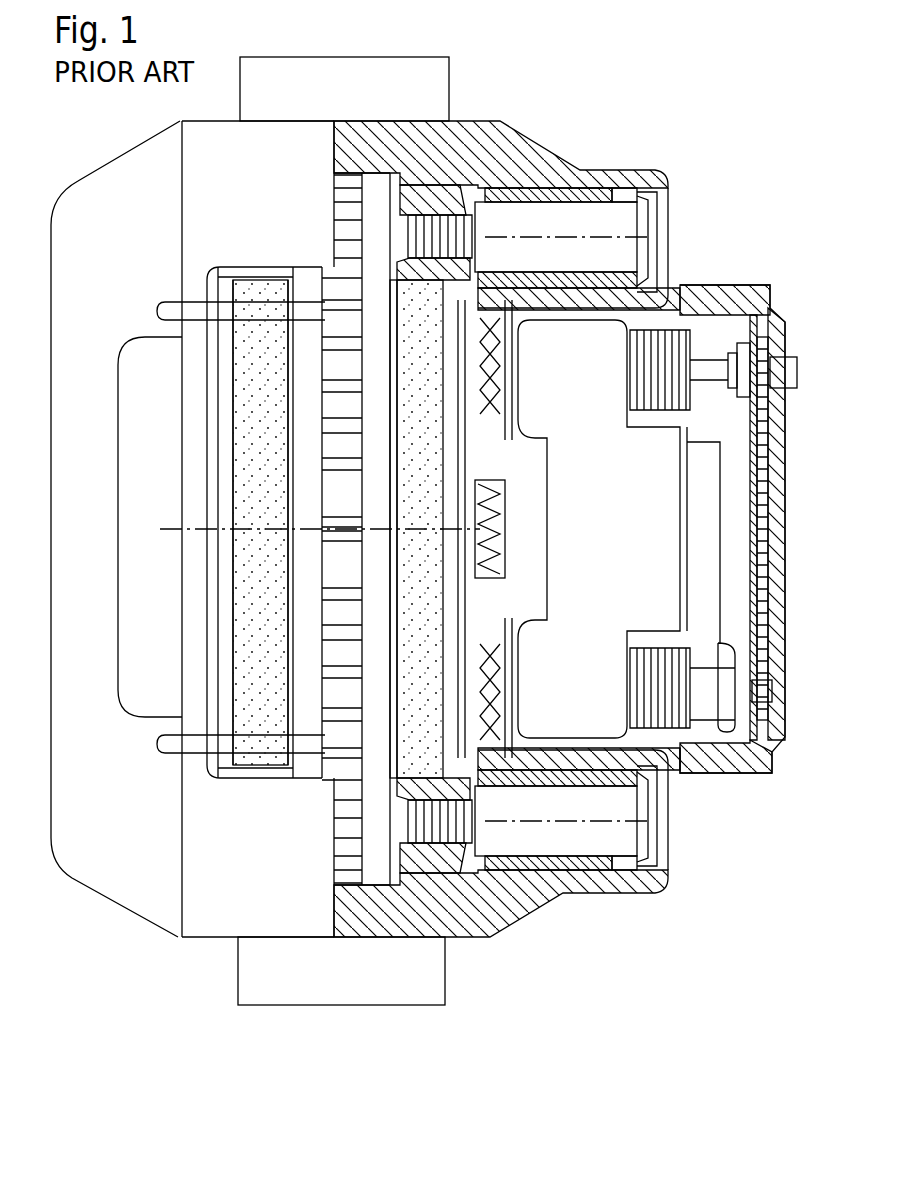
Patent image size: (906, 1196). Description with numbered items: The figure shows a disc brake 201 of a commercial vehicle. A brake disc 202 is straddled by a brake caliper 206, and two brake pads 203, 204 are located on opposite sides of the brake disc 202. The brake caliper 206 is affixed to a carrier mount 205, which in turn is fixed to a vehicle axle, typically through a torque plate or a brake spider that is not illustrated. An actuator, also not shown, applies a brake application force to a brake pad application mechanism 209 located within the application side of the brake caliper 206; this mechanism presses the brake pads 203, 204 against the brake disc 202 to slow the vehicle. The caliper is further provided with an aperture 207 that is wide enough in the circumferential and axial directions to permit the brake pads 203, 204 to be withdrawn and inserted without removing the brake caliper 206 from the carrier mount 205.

The disc brake 201 is at (541, 100).
The brake disc 202 is at (372, 193).
The brake pad 203 is at (413, 750).
The brake pad 204 is at (258, 397).
The carrier mount 205 is at (388, 1005).
The brake caliper 206 is at (598, 170).
The aperture 207 is at (212, 780).
The brake pad application mechanism 209 is at (633, 534).